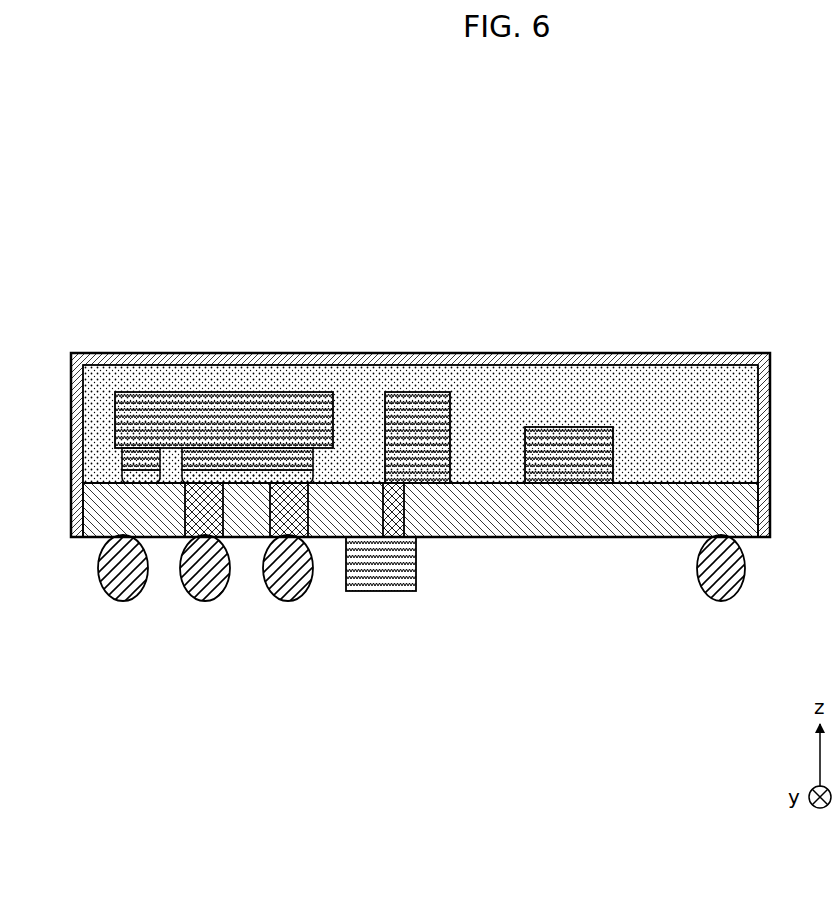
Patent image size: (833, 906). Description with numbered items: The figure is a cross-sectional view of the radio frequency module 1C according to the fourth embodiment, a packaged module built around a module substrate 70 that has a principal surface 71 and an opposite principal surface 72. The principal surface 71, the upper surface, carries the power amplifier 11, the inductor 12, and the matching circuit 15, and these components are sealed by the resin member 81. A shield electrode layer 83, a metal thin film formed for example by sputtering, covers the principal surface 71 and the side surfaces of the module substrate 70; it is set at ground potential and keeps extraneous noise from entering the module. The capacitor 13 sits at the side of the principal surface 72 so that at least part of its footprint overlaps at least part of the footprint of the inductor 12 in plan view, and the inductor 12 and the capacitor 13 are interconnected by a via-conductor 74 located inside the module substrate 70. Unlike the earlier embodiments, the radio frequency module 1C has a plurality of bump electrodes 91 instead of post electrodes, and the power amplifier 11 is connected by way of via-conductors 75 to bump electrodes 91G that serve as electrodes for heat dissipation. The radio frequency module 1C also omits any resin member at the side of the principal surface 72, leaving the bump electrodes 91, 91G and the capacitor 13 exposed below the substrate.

The radio frequency module 1C is at (663, 250).
The power amplifier 11 is at (225, 392).
The inductor 12 is at (415, 392).
The capacitor 13 is at (380, 592).
The matching circuit 15 is at (575, 427).
The module substrate 70 is at (742, 505).
The principal surface 71 is at (742, 482).
The principal surface 72 is at (743, 538).
The via-conductor 74 is at (404, 503).
The via-conductor 75 is at (185, 503).
The resin member 81 is at (737, 397).
The shield electrode layer 83 is at (706, 353).
The bump electrode 91 is at (120, 603).
The bump electrode 91G is at (288, 603).